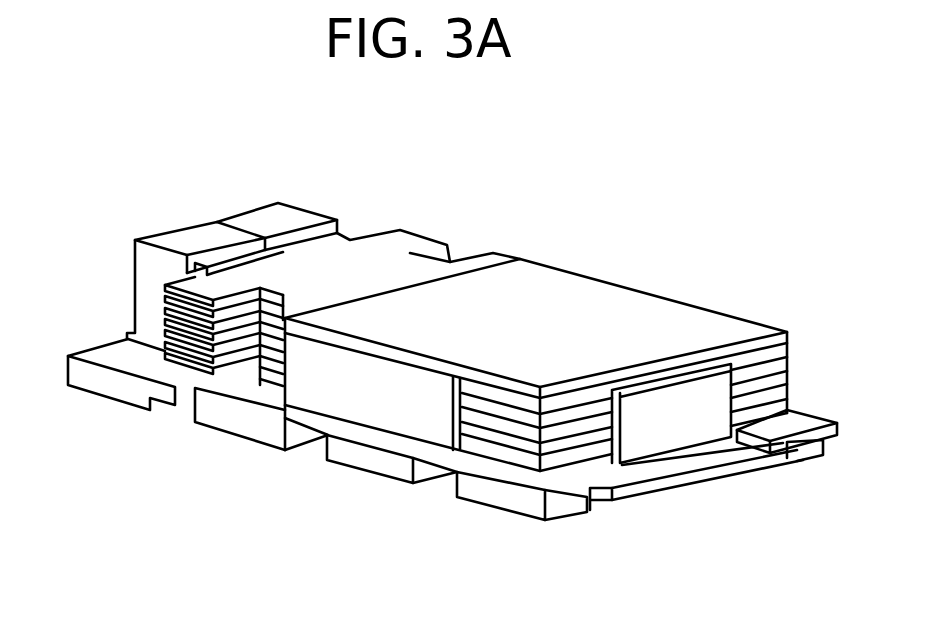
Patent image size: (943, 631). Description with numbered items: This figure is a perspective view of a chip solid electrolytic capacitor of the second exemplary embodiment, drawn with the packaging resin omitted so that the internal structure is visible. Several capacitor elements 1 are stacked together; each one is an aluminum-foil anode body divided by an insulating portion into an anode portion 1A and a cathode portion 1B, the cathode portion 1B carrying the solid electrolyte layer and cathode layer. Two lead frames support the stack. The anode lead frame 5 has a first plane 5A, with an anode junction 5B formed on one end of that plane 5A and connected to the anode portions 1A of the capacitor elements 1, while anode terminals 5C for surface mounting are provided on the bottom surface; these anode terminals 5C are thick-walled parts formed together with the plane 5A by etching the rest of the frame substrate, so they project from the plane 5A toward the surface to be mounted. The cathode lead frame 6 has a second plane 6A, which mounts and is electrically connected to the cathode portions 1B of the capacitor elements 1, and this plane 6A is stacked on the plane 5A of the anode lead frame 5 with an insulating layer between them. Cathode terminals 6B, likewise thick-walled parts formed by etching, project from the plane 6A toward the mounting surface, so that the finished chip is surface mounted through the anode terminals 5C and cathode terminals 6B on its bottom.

The capacitor element 1 is at (563, 243).
The anode portion 1A is at (377, 248).
The cathode portion 1B is at (668, 310).
The anode lead frame 5 is at (96, 327).
The plane 5A is at (682, 465).
The anode junction 5B is at (193, 232).
The anode terminals 5C is at (103, 398).
The cathode lead frame 6 is at (584, 535).
The plane 6A is at (797, 418).
The cathode terminals 6B is at (228, 433).